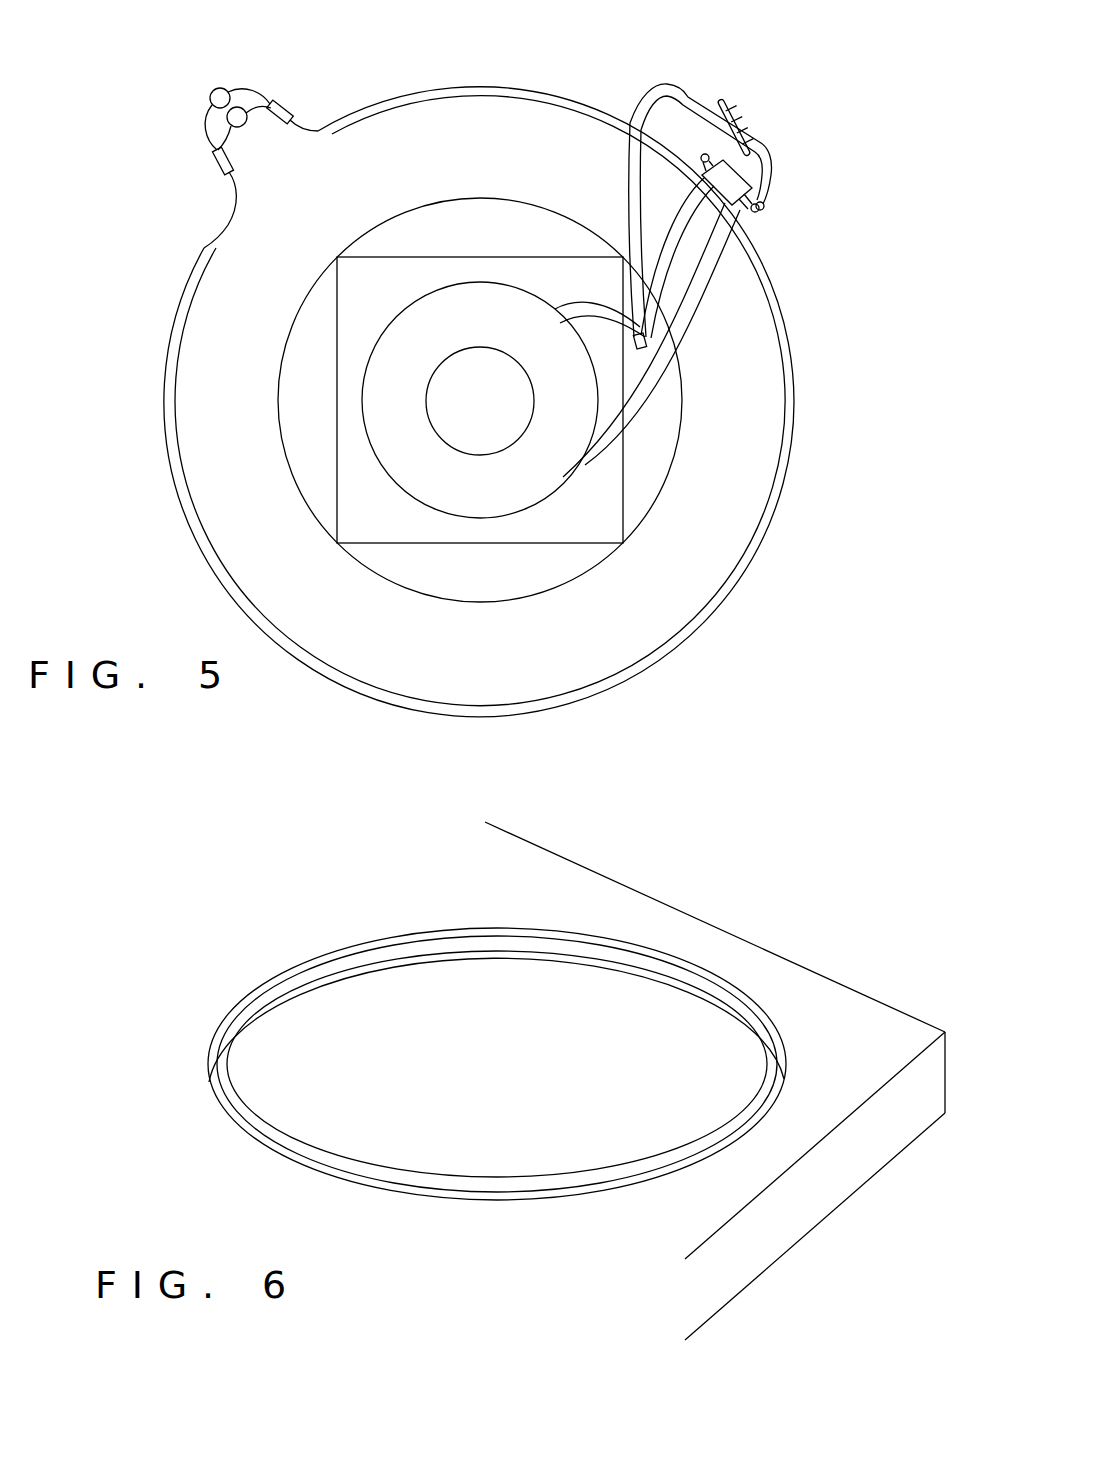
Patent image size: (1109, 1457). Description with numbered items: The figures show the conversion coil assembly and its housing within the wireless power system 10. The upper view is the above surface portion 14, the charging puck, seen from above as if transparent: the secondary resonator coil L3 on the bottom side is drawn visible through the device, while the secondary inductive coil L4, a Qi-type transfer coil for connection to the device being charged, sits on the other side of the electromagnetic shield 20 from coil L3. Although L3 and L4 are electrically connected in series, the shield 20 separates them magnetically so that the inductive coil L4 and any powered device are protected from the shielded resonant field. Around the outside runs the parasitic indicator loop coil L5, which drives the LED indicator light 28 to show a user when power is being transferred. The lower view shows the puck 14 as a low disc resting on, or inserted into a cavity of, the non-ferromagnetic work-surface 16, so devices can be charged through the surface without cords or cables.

In FIG. 6, the system 10 is at (507, 1075).
In FIG. 5, the above surface portion 14 is at (150, 529).
In FIG. 6, the above surface portion 14 is at (288, 936).
In FIG. 6, the work-surface 16 is at (810, 966).
In FIG. 5, the electromagnetic shield 20 is at (388, 297).
In FIG. 5, the indicator light 28 is at (290, 75).
In FIG. 5, the secondary resonator coil L3 is at (497, 331).
In FIG. 5, the secondary inductive coil L4 is at (497, 238).
In FIG. 5, the indicator loop coil L5 is at (746, 578).